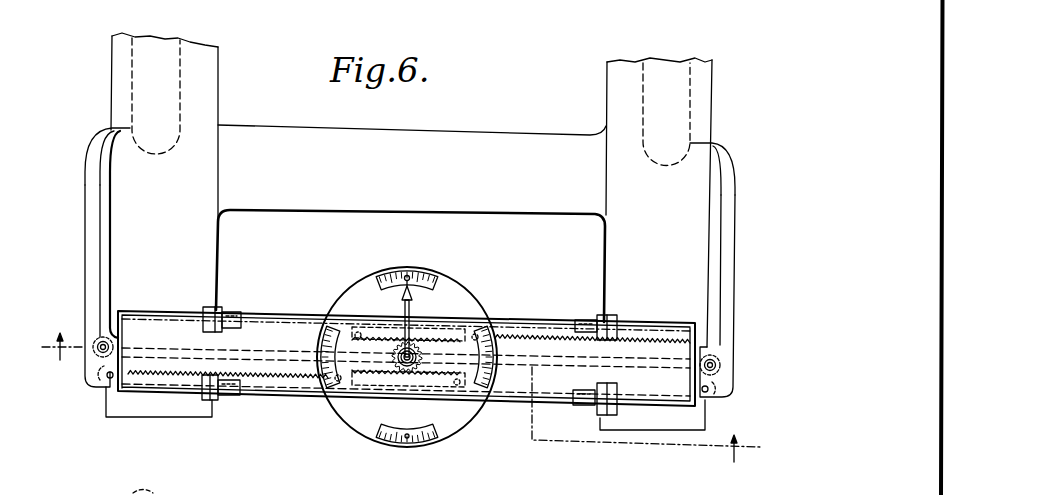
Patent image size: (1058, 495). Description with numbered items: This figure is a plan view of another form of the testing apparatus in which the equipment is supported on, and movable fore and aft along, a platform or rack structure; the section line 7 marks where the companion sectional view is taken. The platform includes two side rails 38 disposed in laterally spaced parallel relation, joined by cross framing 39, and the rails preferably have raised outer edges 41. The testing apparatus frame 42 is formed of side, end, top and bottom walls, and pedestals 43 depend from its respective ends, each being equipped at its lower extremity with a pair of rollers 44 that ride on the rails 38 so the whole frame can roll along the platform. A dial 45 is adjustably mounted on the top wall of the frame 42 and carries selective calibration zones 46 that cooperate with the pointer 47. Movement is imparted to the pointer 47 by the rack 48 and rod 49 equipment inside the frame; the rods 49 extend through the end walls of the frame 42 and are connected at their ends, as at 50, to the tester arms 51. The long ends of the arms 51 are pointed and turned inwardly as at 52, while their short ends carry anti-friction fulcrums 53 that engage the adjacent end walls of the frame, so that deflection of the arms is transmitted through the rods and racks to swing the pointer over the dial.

The section line 7 is at (395, 399).
The side rails 38 is at (205, 127).
The cross framing 39 is at (478, 212).
The raised outer edges 41 is at (120, 400).
The frame 42 is at (293, 393).
The pedestals 43 is at (240, 313).
The rollers 44 is at (222, 307).
The dial 45 is at (460, 436).
The calibration zones 46 is at (412, 254).
The pointer 47 is at (398, 300).
The rack 48 is at (458, 322).
The rods 49 is at (273, 350).
The connection 50 is at (101, 352).
The tester arms 51 is at (90, 262).
The inwardly turned pointed ends 52 is at (128, 128).
The anti-friction fulcrums 53 is at (100, 373).